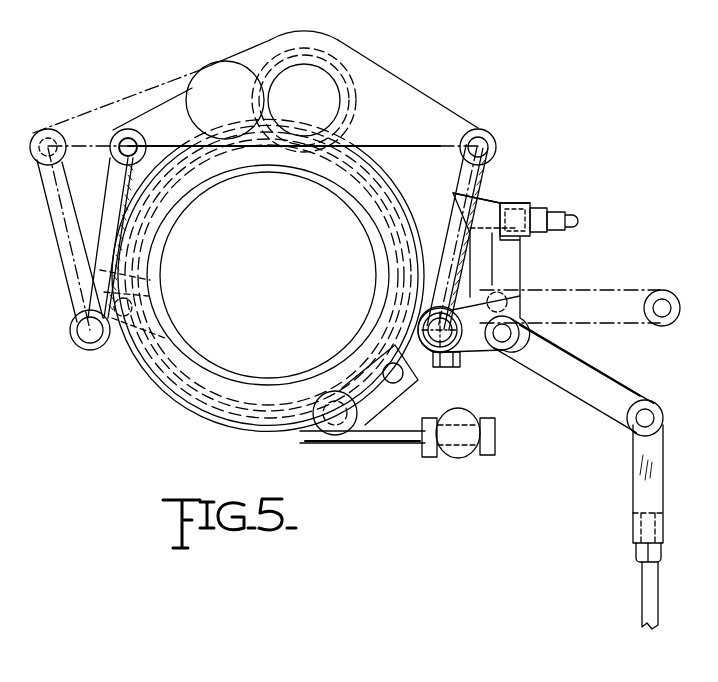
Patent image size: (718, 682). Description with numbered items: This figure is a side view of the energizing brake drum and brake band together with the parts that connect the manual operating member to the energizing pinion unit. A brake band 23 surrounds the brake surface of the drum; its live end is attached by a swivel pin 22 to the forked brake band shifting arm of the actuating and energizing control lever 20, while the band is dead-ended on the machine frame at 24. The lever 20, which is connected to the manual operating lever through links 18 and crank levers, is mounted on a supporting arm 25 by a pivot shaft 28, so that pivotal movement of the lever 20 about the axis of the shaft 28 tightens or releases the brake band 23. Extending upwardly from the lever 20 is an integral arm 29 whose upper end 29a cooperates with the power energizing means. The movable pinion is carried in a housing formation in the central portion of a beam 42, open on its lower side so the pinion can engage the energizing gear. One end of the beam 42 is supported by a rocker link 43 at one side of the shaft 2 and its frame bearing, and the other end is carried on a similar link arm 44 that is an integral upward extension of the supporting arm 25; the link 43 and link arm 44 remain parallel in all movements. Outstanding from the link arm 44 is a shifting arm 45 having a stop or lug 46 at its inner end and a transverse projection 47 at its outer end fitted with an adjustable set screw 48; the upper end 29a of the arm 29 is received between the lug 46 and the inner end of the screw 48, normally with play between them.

The shaft 2 is at (200, 337).
The links 18 is at (650, 595).
The actuating and energizing control lever 20 is at (570, 367).
The swivel pin 22 is at (450, 332).
The brake band 23 is at (293, 438).
The dead end of brake band 24 is at (457, 462).
The supporting arm 25 is at (466, 350).
The pivot shaft 28 is at (505, 342).
The integral arm 29 is at (502, 273).
The upper end of arm 29a is at (545, 180).
The beam 42 is at (405, 100).
The rocker link 43 is at (105, 208).
The link arm 44 is at (463, 190).
The shifting arm 45 is at (490, 193).
The stop or lug 46 is at (455, 212).
The transverse projection 47 is at (533, 203).
The adjustable set screw 48 is at (557, 220).